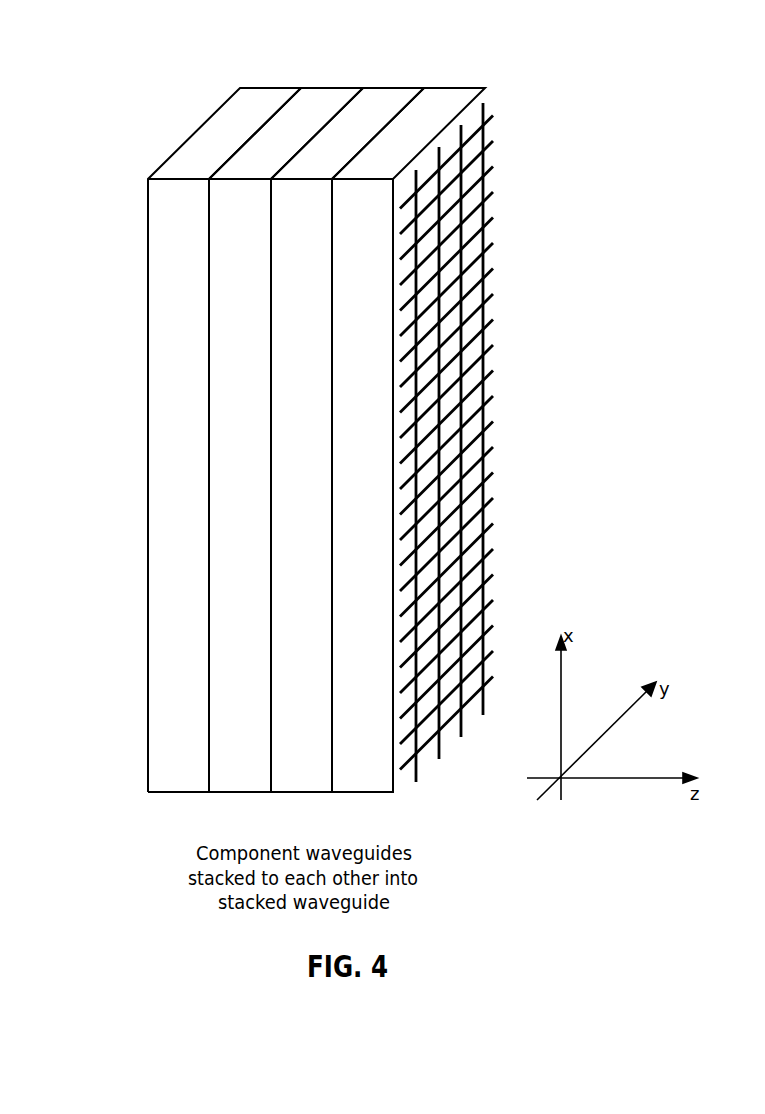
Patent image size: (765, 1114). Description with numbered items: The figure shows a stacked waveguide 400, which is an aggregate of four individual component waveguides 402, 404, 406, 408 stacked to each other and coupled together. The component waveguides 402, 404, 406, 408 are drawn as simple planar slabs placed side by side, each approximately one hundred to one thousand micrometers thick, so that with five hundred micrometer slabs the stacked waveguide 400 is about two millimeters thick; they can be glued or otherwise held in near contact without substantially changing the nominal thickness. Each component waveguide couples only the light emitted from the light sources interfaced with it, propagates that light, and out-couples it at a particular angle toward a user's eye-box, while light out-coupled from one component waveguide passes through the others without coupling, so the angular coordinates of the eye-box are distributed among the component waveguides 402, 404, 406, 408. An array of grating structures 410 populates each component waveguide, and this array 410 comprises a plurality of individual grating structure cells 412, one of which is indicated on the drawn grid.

The stacked waveguide 400 is at (264, 421).
The component waveguide 402 is at (170, 777).
The component waveguide 404 is at (232, 777).
The component waveguide 406 is at (293, 777).
The component waveguide 408 is at (355, 777).
The array of grating structures 410 is at (541, 442).
The grating structure 412 is at (472, 352).